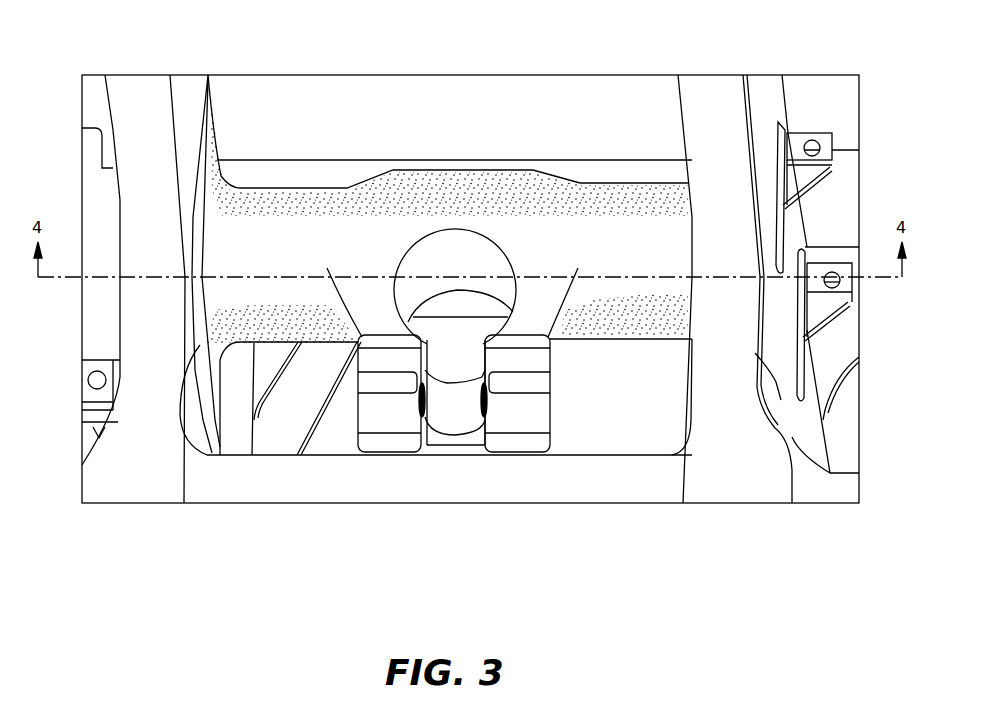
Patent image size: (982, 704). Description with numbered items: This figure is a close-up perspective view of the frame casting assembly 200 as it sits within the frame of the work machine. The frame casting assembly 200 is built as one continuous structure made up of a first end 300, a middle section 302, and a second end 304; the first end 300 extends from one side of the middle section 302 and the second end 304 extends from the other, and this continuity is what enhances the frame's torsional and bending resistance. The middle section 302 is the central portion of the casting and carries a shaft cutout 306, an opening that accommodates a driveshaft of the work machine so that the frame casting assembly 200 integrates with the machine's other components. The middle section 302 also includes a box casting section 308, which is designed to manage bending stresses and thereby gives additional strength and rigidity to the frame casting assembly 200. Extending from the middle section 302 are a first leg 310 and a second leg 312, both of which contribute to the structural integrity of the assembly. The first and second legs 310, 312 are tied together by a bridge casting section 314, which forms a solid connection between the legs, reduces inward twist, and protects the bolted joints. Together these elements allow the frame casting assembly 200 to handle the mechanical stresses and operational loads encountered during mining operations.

The frame casting assembly 200 is at (530, 66).
The first end 300 is at (237, 333).
The middle section 302 is at (443, 141).
The second end 304 is at (693, 313).
The shaft cutout 306 is at (443, 333).
The box casting section 308 is at (474, 215).
The first leg 310 is at (407, 415).
The second leg 312 is at (522, 418).
The bridge casting section 314 is at (455, 410).